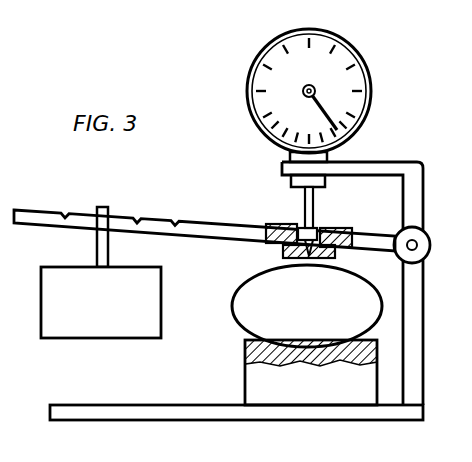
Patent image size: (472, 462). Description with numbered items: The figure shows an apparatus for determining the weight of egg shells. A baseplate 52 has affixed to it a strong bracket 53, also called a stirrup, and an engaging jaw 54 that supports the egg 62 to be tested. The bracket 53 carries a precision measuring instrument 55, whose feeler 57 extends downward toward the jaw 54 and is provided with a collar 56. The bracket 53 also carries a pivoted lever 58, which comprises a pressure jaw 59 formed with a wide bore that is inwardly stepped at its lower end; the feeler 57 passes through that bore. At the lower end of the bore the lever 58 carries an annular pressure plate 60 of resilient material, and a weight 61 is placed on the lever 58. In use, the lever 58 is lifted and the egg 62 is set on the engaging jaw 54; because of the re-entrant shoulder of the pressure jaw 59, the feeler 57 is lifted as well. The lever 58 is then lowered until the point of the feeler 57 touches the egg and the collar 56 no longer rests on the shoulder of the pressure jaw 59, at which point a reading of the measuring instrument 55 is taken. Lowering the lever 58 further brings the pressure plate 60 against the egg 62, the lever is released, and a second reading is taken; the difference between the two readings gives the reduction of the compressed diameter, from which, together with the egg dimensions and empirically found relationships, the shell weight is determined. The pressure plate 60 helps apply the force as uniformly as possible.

The baseplate 52 is at (157, 412).
The bracket 53 is at (414, 212).
The engaging jaw 54 is at (246, 383).
The precision measuring instrument 55 is at (258, 80).
The collar 56 is at (314, 232).
The feeler 57 is at (313, 201).
The pivoted lever 58 is at (198, 230).
The pressure jaw 59 is at (290, 226).
The annular pressure plate 60 is at (284, 252).
The weight 61 is at (150, 298).
The egg 62 is at (246, 291).